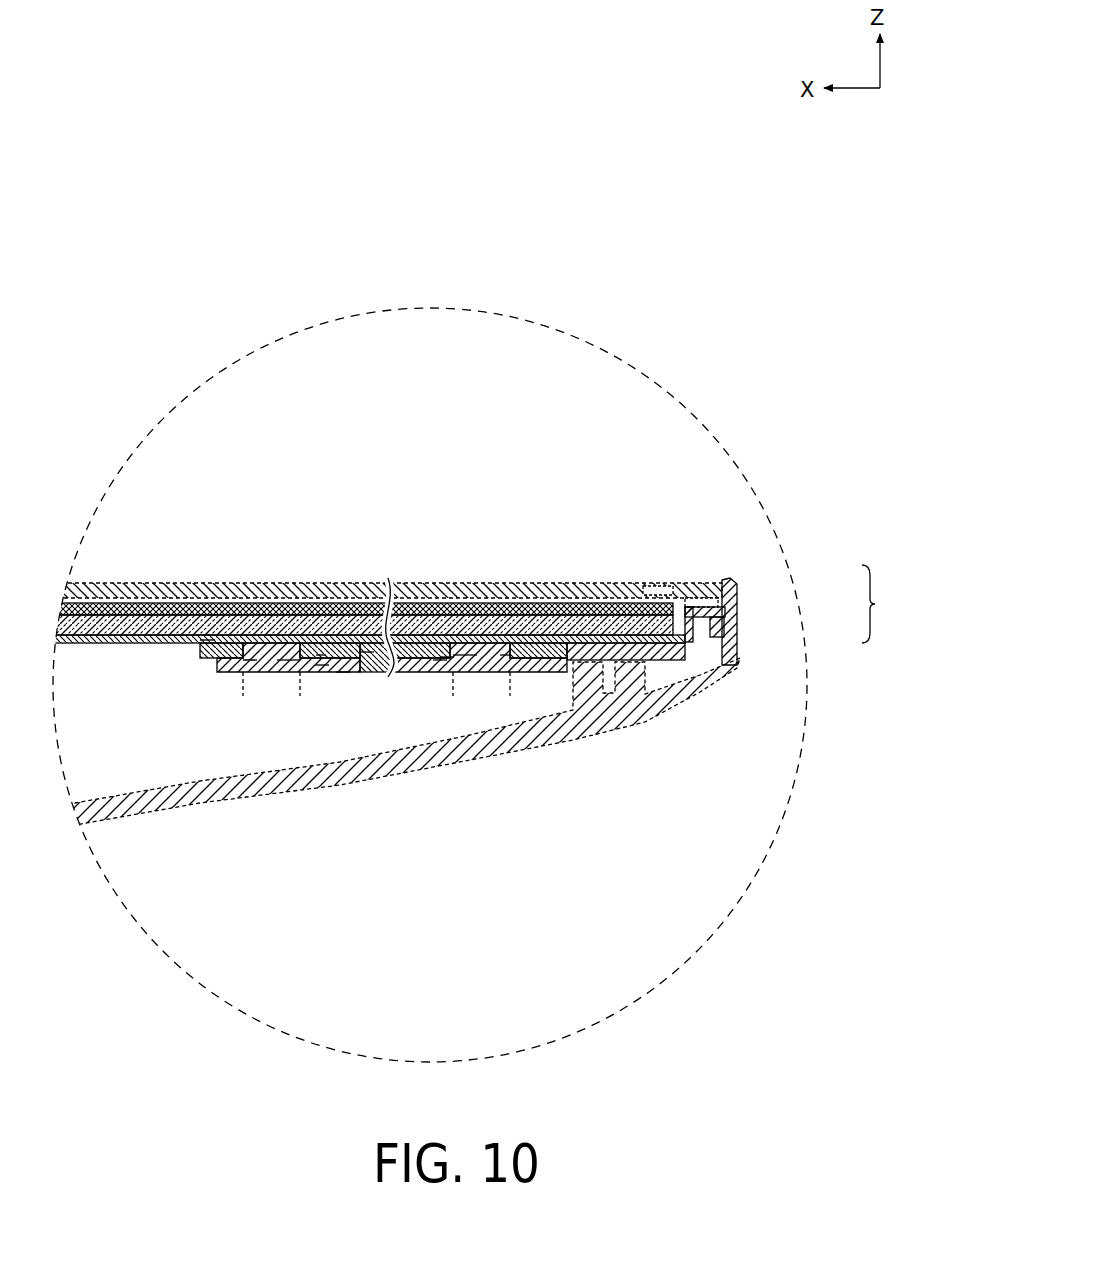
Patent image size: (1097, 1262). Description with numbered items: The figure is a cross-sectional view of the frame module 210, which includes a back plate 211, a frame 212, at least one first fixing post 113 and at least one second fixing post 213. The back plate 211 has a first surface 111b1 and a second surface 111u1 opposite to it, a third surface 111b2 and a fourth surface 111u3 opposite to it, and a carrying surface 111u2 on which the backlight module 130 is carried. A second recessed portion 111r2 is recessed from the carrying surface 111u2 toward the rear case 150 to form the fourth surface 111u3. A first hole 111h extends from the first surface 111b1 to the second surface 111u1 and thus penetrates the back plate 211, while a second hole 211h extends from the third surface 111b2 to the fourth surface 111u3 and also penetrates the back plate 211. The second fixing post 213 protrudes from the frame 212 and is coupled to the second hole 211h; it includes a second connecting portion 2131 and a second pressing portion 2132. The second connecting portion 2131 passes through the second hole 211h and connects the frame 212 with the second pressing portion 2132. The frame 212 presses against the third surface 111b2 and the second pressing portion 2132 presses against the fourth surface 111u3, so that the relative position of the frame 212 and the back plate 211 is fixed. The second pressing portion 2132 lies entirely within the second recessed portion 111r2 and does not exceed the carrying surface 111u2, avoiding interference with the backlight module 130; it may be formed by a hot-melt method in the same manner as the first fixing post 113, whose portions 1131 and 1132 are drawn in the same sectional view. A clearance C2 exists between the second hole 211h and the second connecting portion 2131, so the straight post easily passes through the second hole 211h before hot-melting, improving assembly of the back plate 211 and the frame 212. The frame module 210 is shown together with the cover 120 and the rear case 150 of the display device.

The cover 120 is at (697, 587).
The backlight module 130 is at (58, 603).
The rear case 150 is at (703, 670).
The frame module 210 is at (887, 604).
The back plate 211 is at (690, 643).
The frame 212 is at (737, 617).
The second fixing post 213 is at (303, 538).
The second connecting portion 2131 is at (257, 652).
The second pressing portion 2132 is at (277, 652).
The first fixing post 113 is at (562, 538).
The first portion 1131 is at (477, 647).
The second portion 1132 is at (500, 647).
The second surface 111u1 is at (447, 657).
The carrying surface 111u2 is at (367, 652).
The fourth surface 111u3 is at (321, 655).
The second recessed portion 111r2 is at (207, 640).
The first surface 111b1 is at (440, 660).
The third surface 111b2 is at (343, 672).
The first hole 111h is at (508, 688).
The second hole 211h is at (298, 688).
The clearance C2 is at (322, 665).